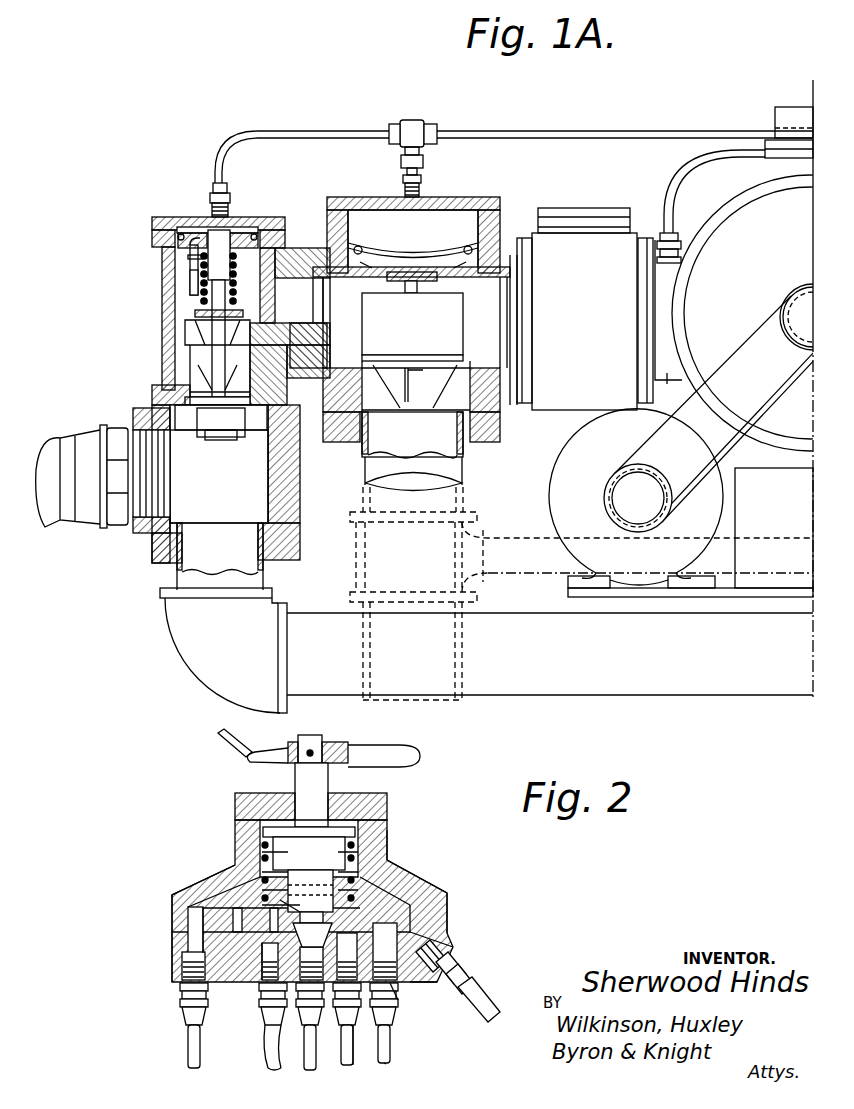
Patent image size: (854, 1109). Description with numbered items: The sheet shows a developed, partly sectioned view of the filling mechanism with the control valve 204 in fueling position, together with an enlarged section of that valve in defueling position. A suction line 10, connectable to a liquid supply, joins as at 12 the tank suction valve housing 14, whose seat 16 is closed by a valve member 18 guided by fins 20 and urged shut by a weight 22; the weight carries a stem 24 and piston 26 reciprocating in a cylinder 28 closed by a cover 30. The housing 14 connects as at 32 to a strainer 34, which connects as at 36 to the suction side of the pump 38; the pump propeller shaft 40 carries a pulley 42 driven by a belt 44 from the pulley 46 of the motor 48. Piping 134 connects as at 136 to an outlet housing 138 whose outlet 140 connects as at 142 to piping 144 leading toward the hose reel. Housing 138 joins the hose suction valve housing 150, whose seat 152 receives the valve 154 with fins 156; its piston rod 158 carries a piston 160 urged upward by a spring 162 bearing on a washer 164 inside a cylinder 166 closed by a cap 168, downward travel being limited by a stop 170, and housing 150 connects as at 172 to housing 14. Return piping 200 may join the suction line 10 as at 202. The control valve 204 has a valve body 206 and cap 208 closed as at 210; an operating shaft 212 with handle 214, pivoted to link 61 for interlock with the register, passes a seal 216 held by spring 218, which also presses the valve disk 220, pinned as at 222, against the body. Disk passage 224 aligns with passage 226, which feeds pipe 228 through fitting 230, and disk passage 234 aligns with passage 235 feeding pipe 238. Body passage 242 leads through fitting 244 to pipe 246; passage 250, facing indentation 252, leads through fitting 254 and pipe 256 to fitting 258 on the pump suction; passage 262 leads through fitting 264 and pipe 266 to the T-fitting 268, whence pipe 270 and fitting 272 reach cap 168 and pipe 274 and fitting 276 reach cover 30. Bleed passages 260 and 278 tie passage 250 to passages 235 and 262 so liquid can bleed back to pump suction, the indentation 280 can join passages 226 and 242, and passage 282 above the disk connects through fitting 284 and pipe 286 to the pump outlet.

In FIG. 1A, the suction line 10 is at (466, 474).
In FIG. 1A, the connection 12 is at (470, 448).
In FIG. 1A, the inlet or tank suction valve housing 14 is at (505, 418).
In FIG. 1A, the seat 16 is at (476, 368).
In FIG. 1A, the valve member 18 is at (456, 356).
In FIG. 1A, the guiding fins 20 is at (445, 398).
In FIG. 1A, the weight 22 is at (464, 300).
In FIG. 1A, the stem 24 is at (420, 287).
In FIG. 1A, the piston 26 is at (412, 258).
In FIG. 1A, the cylinder 28 is at (502, 216).
In FIG. 1A, the cover 30 is at (446, 197).
In FIG. 1A, the connection 32 is at (536, 410).
In FIG. 1A, the strainer 34 is at (560, 412).
In FIG. 1A, the connection 36 is at (668, 385).
In FIG. 1A, the pump 38 is at (758, 198).
In FIG. 1A, the propeller shaft 40 is at (803, 300).
In FIG. 1A, the pulley 42 is at (783, 302).
In FIG. 1A, the belt 44 is at (752, 336).
In FIG. 1A, the pulley 46 is at (662, 511).
In FIG. 1A, the motor or other actuating means 48 is at (555, 502).
In FIG. 1A, the piping 134 is at (605, 691).
In FIG. 1A, the connection 136 is at (268, 584).
In FIG. 2, the connection 136 is at (355, 1025).
In FIG. 1A, the outlet housing 138 is at (300, 527).
In FIG. 1A, the outlet 140 is at (122, 425).
In FIG. 1A, the connection 142 is at (148, 422).
In FIG. 1A, the piping 144 is at (62, 436).
In FIG. 1A, the hose suction valve housing 150 is at (268, 357).
In FIG. 1A, the valve seat 152 is at (270, 372).
In FIG. 1A, the valve 154 is at (247, 412).
In FIG. 1A, the guiding fins 156 is at (195, 377).
In FIG. 1A, the piston rod 158 is at (237, 292).
In FIG. 1A, the piston 160 is at (240, 227).
In FIG. 1A, the spring 162 is at (188, 276).
In FIG. 1A, the washer 164 is at (245, 311).
In FIG. 1A, the cylinder 166 is at (275, 236).
In FIG. 1A, the cap 168 is at (180, 217).
In FIG. 1A, the stop 170 is at (194, 292).
In FIG. 1A, the connection 172 is at (305, 248).
In FIG. 1A, the piping 200 is at (770, 537).
In FIG. 1A, the connection 202 is at (483, 521).
In FIG. 1A, the pipe 256 is at (740, 148).
In FIG. 2, the pipe 256 is at (342, 1066).
In FIG. 1A, the fitting 258 is at (681, 250).
In FIG. 1A, the pipe 266 is at (671, 131).
In FIG. 2, the pipe 266 is at (267, 1071).
In FIG. 1A, the T-fitting 268 is at (415, 120).
In FIG. 1A, the pipe 270 is at (348, 130).
In FIG. 1A, the fitting 272 is at (212, 184).
In FIG. 1A, the pipe 274 is at (424, 163).
In FIG. 1A, the fitting 276 is at (403, 181).
In FIG. 2, the link 61 is at (217, 736).
In FIG. 2, the control valve 204 is at (450, 907).
In FIG. 2, the valve body 206 is at (458, 937).
In FIG. 2, the valve cap 208 is at (388, 798).
In FIG. 2, the closure 210 is at (270, 793).
In FIG. 2, the operating shaft 212 is at (311, 735).
In FIG. 2, the operating lever or handle 214 is at (392, 733).
In FIG. 2, the seal 216 is at (330, 825).
In FIG. 2, the spring 218 is at (382, 822).
In FIG. 2, the valve disk 220 is at (392, 852).
In FIG. 2, the pin 222 is at (296, 880).
In FIG. 2, the through passage 224 is at (215, 935).
In FIG. 2, the passage 226 is at (432, 974).
In FIG. 2, the pipe 228 is at (392, 1061).
In FIG. 2, the fitting 230 is at (392, 1022).
In FIG. 2, the through passage 234 is at (270, 905).
In FIG. 2, the passage 235 is at (398, 1000).
In FIG. 2, the pipe 238 is at (386, 1066).
In FIG. 2, the passage 242 is at (452, 918).
In FIG. 2, the fitting 244 is at (466, 968).
In FIG. 2, the pipe 246 is at (492, 1012).
In FIG. 2, the passage 250 is at (280, 900).
In FIG. 2, the indentation 252 is at (316, 900).
In FIG. 2, the fitting 254 is at (304, 1061).
In FIG. 2, the small bleed passage 260 is at (416, 880).
In FIG. 2, the passage 262 is at (272, 948).
In FIG. 2, the fitting 264 is at (268, 1015).
In FIG. 2, the small bleed passage 278 is at (272, 955).
In FIG. 2, the indentation or passage 280 is at (448, 895).
In FIG. 2, the passage 282 is at (190, 900).
In FIG. 2, the fitting 284 is at (186, 1012).
In FIG. 2, the pipe 286 is at (187, 1068).